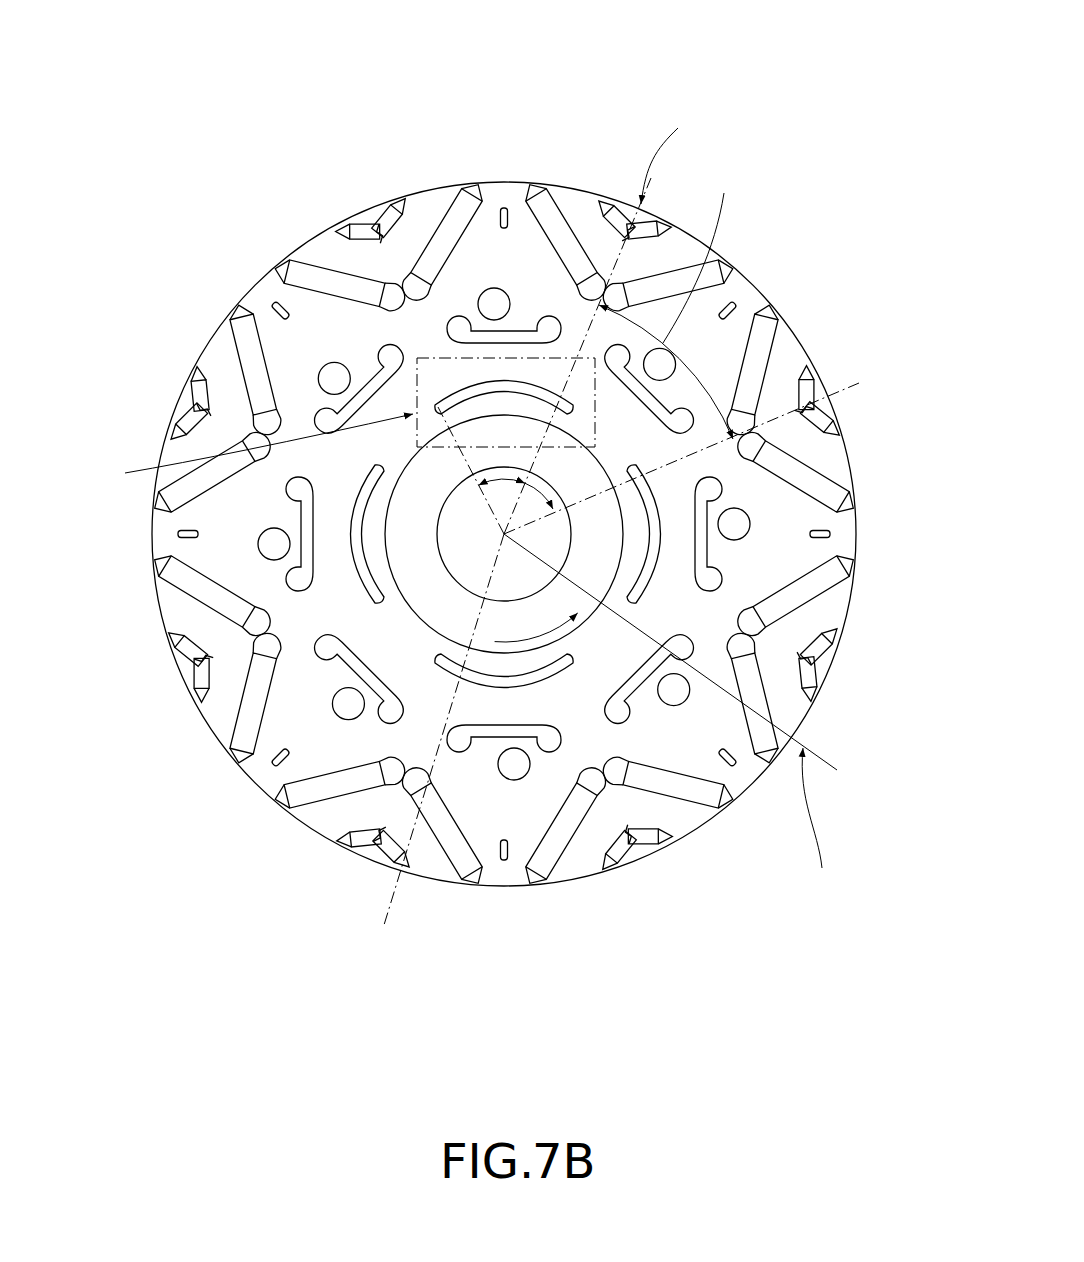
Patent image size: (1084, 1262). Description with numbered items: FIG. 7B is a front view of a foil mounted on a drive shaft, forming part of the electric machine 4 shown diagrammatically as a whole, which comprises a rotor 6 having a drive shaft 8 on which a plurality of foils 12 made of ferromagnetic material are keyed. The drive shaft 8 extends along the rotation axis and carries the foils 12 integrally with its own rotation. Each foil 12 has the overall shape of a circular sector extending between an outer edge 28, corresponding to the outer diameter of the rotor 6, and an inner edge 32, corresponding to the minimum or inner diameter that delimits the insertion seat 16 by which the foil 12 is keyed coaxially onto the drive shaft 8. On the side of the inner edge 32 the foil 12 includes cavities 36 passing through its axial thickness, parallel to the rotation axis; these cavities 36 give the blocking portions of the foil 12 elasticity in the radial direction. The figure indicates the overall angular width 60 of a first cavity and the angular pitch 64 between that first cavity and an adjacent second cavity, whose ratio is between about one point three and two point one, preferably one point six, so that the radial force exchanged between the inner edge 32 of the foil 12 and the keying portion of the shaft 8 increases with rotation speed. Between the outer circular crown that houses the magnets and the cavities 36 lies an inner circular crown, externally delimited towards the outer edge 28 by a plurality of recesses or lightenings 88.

The electric machine 4 is at (505, 560).
The outer edge 28 is at (385, 200).
The recesses or lightenings 88 is at (367, 387).
The cavities 36 is at (518, 576).
The rotor 6 is at (741, 299).
The foils 12 is at (529, 491).
The overall angular width 60 is at (500, 463).
The angular pitch 64 is at (851, 564).
The drive shaft 8 is at (433, 583).
The insertion seat 16 is at (561, 840).
The inner edge 32 is at (552, 684).